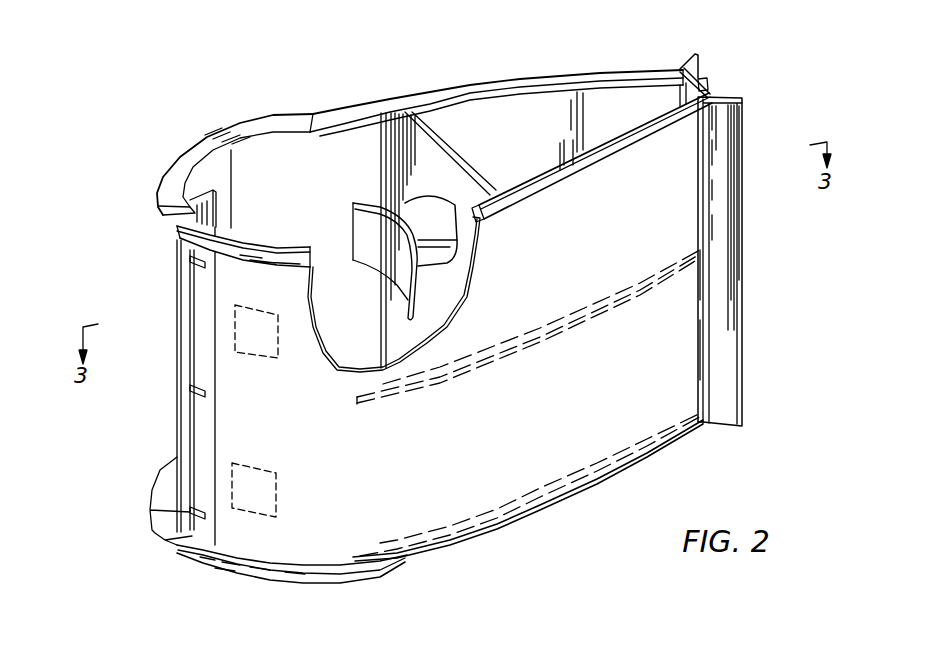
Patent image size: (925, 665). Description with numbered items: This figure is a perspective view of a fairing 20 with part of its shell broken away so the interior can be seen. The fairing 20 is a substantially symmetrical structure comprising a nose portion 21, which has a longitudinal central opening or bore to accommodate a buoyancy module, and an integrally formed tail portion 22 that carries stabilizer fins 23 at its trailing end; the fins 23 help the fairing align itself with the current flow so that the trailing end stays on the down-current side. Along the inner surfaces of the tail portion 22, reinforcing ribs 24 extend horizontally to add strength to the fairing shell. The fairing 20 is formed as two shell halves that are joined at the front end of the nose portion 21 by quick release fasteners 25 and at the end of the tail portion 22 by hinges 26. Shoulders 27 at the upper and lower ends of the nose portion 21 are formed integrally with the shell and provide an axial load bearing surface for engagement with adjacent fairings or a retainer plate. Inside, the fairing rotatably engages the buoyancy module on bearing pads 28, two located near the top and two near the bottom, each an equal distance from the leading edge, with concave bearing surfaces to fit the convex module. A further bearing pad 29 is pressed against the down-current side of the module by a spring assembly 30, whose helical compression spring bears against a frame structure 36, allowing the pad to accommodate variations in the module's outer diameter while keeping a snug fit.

The fairing 20 is at (145, 424).
The nose portion 21 is at (236, 115).
The tail portion 22 is at (594, 64).
The stabilizer fins 23 is at (700, 60).
The reinforcing ribs 24 is at (654, 118).
The quick release fasteners 25 is at (190, 264).
The hinges 26 is at (708, 80).
The shoulders 27 is at (193, 140).
The bearing pads 28 is at (200, 197).
The bearing pad 29 is at (378, 248).
The spring assembly 30 is at (447, 243).
The frame structure 36 is at (533, 225).